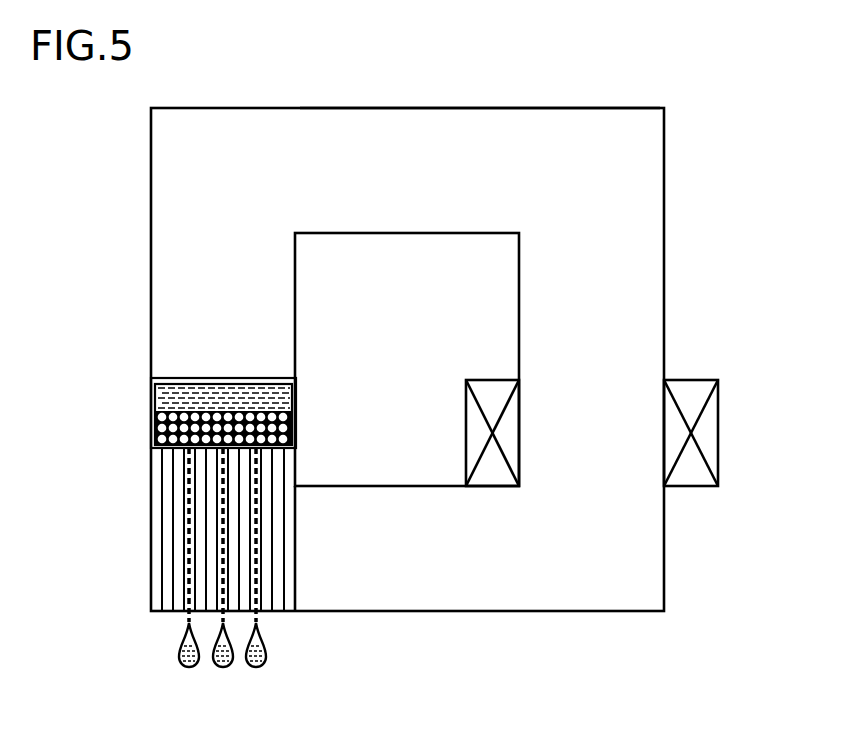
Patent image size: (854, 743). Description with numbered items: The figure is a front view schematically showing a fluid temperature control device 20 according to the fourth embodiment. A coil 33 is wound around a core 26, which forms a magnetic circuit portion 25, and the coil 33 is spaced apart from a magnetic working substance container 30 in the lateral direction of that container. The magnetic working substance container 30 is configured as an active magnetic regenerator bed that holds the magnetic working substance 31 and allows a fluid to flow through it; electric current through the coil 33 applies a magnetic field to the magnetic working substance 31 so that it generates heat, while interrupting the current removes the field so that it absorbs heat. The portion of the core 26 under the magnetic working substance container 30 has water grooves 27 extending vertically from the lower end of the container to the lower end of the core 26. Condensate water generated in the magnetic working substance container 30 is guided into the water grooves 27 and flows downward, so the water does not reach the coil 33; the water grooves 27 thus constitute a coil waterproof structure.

The fluid temperature control device 20 is at (268, 88).
The magnetic circuit portion 25 is at (501, 108).
The core 26 is at (603, 108).
The water grooves 27 is at (168, 535).
The magnetic working substance container 30 is at (149, 418).
The magnetic working substance 31 is at (280, 430).
The coil 33 is at (720, 430).